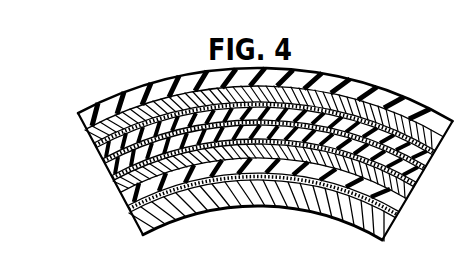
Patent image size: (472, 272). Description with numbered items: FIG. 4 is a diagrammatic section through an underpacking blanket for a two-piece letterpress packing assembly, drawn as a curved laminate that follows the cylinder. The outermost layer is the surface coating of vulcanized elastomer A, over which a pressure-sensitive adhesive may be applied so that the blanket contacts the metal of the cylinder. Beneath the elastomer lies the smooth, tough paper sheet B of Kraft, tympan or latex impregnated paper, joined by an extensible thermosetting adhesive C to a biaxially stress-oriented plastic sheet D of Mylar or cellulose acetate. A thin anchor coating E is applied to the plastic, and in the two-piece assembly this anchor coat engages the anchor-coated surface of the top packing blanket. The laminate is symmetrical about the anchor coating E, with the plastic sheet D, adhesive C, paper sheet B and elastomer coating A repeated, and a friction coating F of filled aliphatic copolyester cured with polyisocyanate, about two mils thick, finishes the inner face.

The surface coating of vulcanized elastomer A is at (80, 113).
The smooth, tough paper sheet B is at (90, 136).
The extensible thermosetting adhesive C is at (95, 146).
The biaxially stress-oriented plastic sheet D is at (99, 154).
The anchor coating E is at (104, 162).
The friction coating F is at (137, 224).